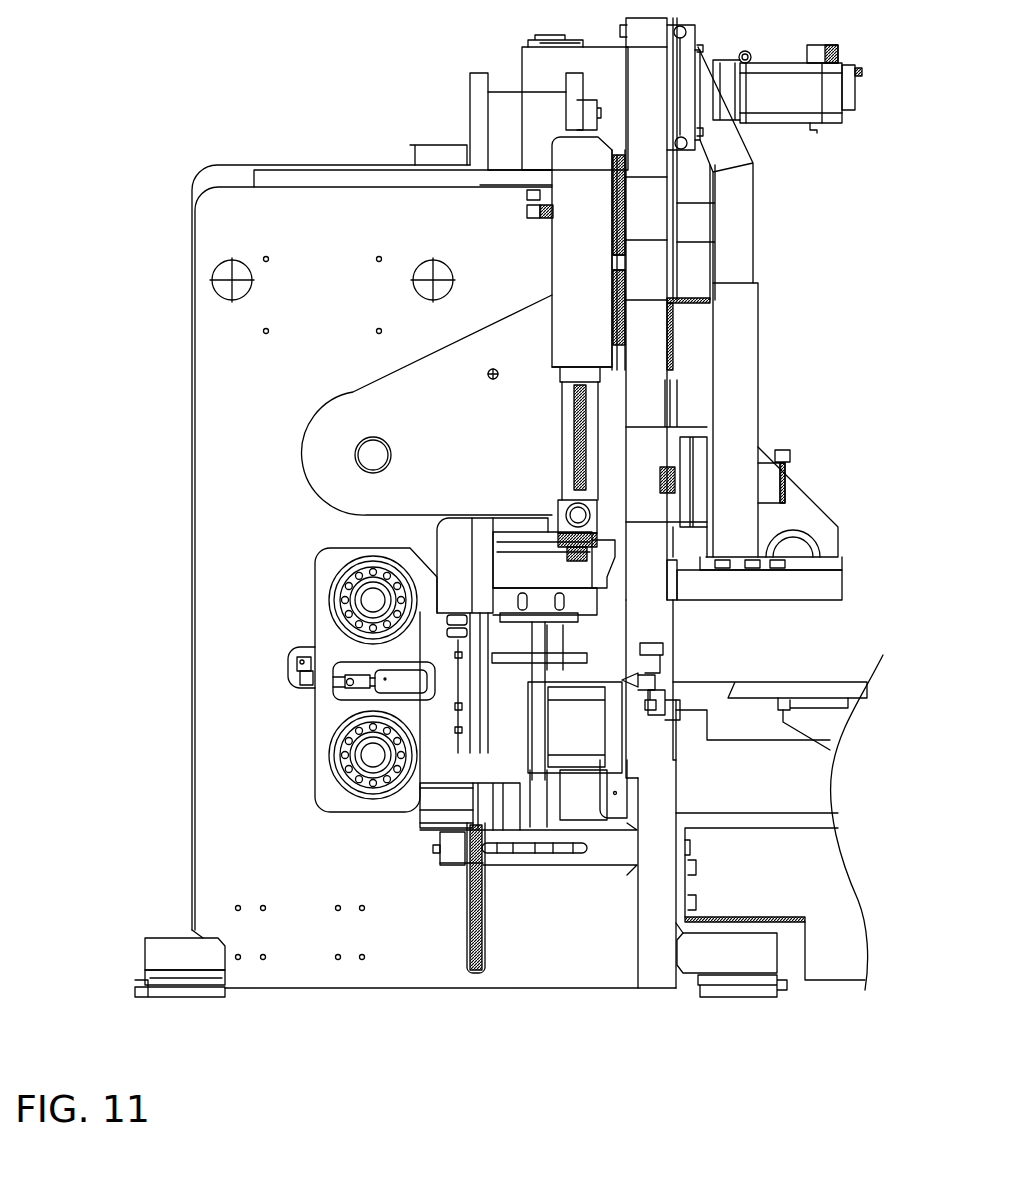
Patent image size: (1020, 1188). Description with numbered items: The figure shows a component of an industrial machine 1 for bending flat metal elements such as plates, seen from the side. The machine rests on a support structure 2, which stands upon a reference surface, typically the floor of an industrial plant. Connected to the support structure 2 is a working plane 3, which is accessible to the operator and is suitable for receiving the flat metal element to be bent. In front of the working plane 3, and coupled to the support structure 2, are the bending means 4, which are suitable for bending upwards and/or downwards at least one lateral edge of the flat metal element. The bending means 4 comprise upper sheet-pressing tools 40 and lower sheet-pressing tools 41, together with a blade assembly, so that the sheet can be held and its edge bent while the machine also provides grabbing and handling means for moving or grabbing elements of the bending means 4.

The industrial machine 1 is at (862, 232).
The support structure 2 is at (183, 850).
The working plane 3 is at (848, 690).
The bending means 4 is at (728, 648).
The upper sheet-pressing tools 40 is at (658, 618).
The lower sheet-pressing tools 41 is at (656, 722).